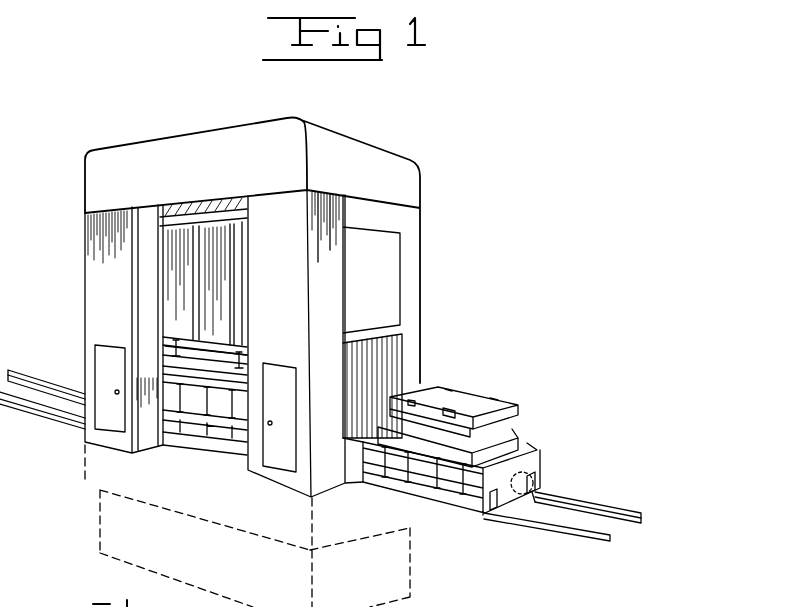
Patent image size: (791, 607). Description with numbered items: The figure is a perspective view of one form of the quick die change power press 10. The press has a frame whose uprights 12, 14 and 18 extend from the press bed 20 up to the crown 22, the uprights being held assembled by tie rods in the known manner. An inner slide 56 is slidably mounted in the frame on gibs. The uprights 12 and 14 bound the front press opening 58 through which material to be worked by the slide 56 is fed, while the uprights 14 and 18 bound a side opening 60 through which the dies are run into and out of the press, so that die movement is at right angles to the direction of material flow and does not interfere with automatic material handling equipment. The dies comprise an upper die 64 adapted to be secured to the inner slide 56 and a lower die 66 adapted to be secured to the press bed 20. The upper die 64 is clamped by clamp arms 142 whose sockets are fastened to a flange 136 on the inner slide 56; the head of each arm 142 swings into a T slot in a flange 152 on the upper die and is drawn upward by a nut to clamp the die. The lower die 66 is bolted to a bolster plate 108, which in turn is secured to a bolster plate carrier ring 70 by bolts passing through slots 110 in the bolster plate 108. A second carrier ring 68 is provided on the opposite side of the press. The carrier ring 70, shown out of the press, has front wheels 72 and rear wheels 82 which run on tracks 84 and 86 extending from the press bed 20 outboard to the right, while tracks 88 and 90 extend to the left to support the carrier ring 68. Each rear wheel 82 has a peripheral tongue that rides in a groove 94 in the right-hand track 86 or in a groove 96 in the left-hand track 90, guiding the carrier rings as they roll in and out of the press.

The quick die change power press 10 is at (433, 285).
The upright 12 is at (97, 313).
The upright 14 is at (325, 491).
The upright 18 is at (421, 362).
The press bed 20 is at (188, 447).
The crown 22 is at (421, 176).
The inner slide 56 is at (238, 300).
The front press opening 58 is at (152, 209).
The opening 60 is at (398, 340).
The upper die 64 is at (525, 417).
The lower die 66 is at (515, 433).
The bolster plate carrier ring 68 is at (208, 440).
The bolster plate carrier ring 70 is at (508, 498).
The front wheels 72 is at (494, 513).
The rear wheels 82 is at (534, 494).
The track 84 is at (593, 540).
The track 86 is at (638, 513).
The track 88 is at (54, 413).
The track 90 is at (37, 378).
The groove 94 is at (600, 508).
The groove 96 is at (65, 385).
The bolster plate 108 is at (535, 463).
The slots 110 is at (232, 424).
The flange 136 is at (228, 340).
The clamp arm 142 is at (210, 351).
The flange 152 is at (232, 372).